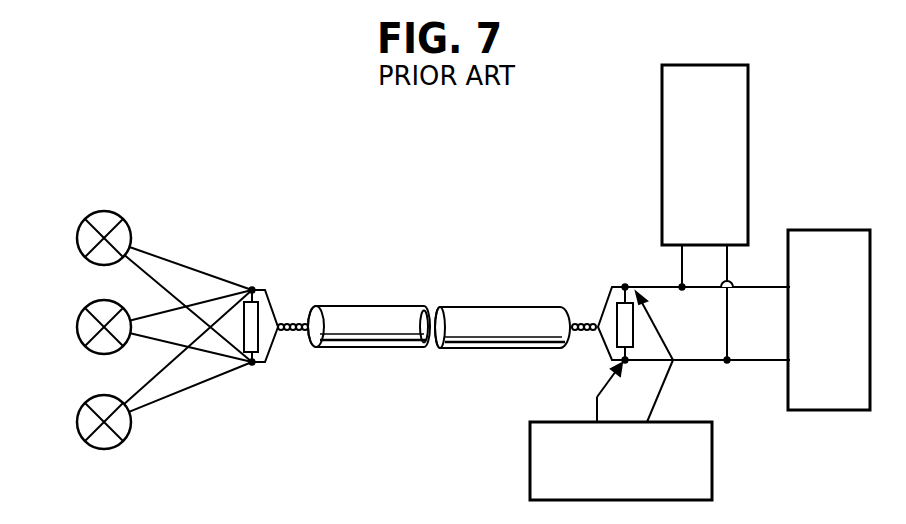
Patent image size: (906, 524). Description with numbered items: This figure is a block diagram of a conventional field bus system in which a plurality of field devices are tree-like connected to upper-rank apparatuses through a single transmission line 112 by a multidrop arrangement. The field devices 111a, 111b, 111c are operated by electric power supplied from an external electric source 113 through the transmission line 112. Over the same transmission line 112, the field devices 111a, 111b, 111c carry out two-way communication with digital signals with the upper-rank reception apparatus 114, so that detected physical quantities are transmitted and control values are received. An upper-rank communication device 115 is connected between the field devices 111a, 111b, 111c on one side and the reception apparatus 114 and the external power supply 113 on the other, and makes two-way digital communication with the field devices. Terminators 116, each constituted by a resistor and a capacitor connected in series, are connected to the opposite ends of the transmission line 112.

The field device 111a is at (98, 212).
The field device 111b is at (97, 303).
The field device 111c is at (96, 398).
The transmission line 112 is at (367, 306).
The external electric source 113 is at (662, 130).
The reception apparatus 114 is at (820, 229).
The communication device 115 is at (530, 462).
The terminator 116 is at (262, 337).